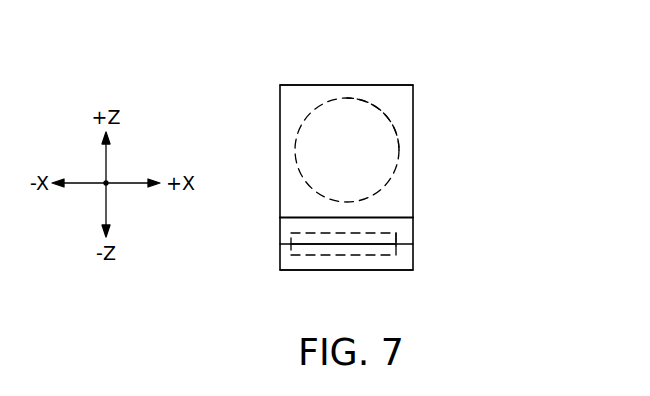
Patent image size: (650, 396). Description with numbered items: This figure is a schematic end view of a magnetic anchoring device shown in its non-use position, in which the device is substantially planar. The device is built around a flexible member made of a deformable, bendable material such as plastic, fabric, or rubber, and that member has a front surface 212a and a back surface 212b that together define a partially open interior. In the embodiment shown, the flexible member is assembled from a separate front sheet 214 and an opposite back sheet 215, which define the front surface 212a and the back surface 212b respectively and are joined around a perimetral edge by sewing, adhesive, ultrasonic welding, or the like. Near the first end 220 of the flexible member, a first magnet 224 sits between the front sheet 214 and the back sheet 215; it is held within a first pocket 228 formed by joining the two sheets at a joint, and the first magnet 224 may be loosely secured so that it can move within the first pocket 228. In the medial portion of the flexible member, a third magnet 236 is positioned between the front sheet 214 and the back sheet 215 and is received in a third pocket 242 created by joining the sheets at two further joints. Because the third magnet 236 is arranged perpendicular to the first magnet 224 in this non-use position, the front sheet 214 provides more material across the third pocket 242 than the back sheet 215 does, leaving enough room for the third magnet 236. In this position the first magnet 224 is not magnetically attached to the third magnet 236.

The front surface 212a is at (347, 85).
The back surface 212b is at (347, 270).
The front sheet 214 is at (280, 135).
The back sheet 215 is at (280, 257).
The first end 220 is at (382, 244).
The first magnet 224 is at (397, 233).
The first pocket 228 is at (403, 256).
The third magnet 236 is at (401, 106).
The third pocket 242 is at (401, 149).